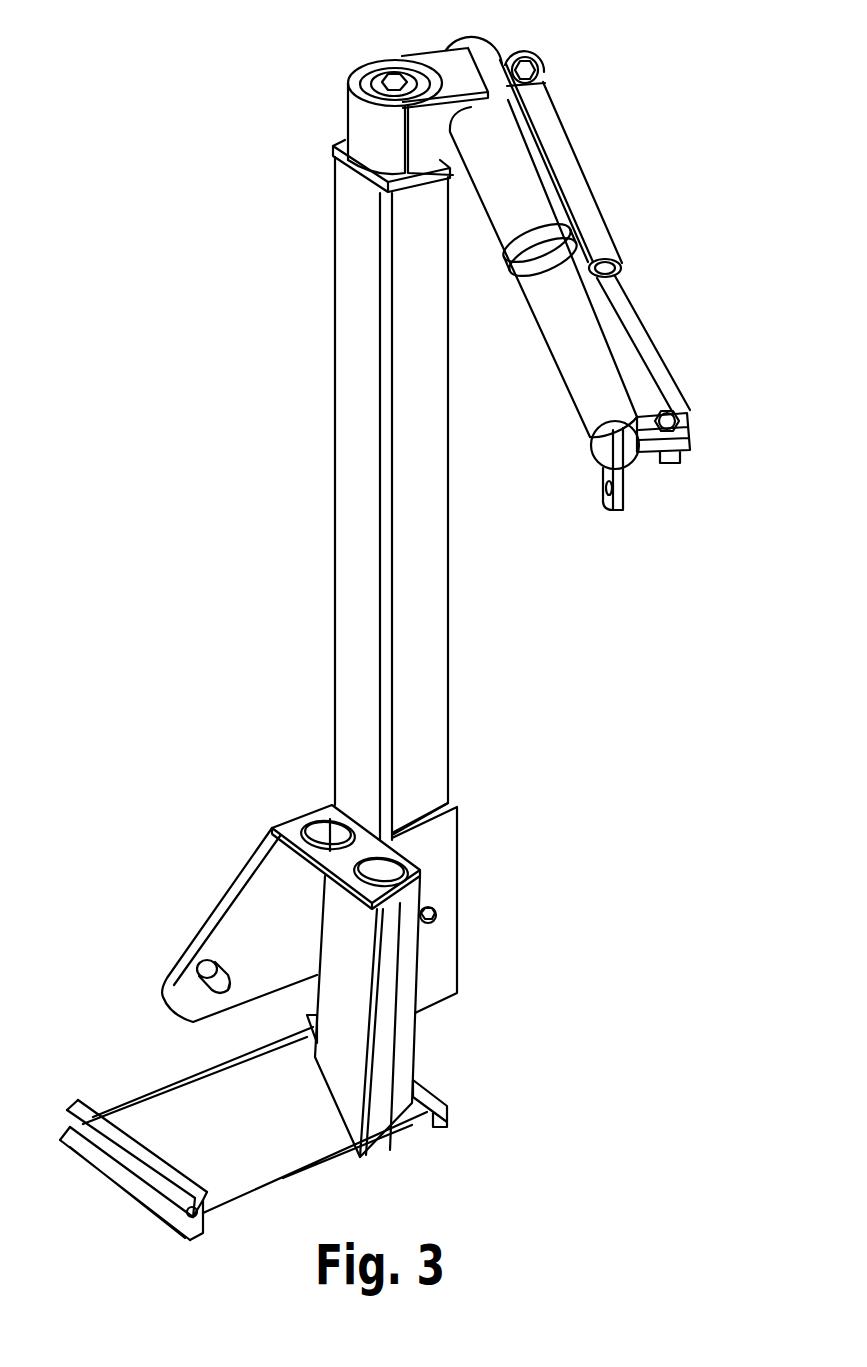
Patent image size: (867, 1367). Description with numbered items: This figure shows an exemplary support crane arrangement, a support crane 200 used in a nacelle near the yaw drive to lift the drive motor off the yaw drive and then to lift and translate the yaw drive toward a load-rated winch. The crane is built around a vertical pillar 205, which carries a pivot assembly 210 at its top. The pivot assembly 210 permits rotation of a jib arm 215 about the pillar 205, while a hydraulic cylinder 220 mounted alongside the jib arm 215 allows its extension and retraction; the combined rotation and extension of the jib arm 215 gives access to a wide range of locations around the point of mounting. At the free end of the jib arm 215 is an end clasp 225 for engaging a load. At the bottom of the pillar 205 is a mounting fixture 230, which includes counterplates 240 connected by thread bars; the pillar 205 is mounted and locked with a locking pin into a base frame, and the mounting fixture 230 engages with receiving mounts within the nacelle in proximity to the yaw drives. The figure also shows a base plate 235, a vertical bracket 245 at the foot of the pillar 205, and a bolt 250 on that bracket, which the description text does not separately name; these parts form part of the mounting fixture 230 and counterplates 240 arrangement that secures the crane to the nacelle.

The support crane 200 is at (726, 180).
The vertical pillar 205 is at (422, 548).
The pivot assembly 210 is at (362, 62).
The jib arm 215 is at (580, 337).
The hydraulic cylinder 220 is at (563, 173).
The end clasp 225 is at (623, 497).
The mounting fixture 230 is at (110, 1087).
The base plate 235 is at (193, 1080).
The counterplates 240 is at (167, 1223).
The bracket 245 is at (380, 1038).
The bolt 250 is at (433, 920).